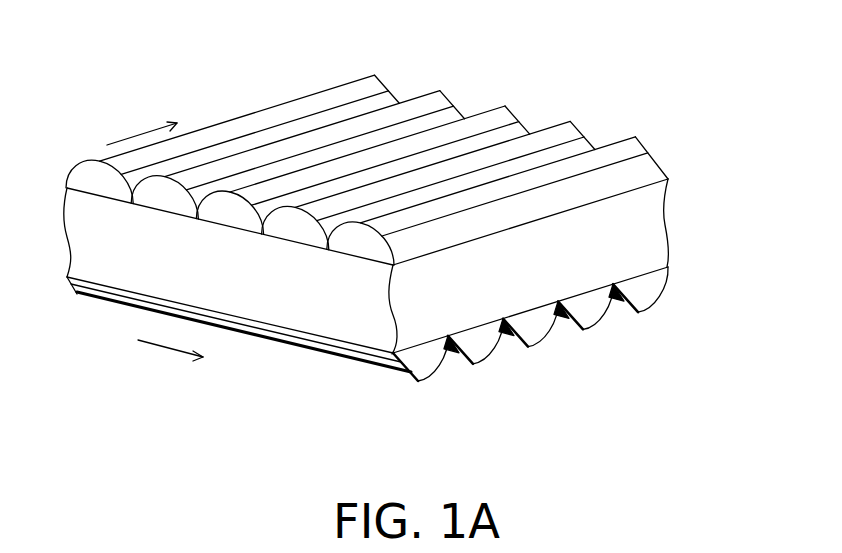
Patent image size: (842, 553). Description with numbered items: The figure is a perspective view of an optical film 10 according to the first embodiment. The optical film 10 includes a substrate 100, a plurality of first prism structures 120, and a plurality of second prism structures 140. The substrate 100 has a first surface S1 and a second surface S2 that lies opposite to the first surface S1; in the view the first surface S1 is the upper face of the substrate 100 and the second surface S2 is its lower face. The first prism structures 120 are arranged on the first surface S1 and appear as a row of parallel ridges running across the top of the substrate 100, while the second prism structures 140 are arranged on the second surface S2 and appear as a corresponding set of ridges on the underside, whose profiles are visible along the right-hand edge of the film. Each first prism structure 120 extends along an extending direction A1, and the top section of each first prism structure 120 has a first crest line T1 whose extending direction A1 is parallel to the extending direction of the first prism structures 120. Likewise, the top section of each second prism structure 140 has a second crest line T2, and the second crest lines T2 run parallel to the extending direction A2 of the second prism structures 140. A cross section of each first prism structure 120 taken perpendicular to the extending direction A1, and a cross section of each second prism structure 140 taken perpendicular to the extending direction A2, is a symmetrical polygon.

The optical film 10 is at (88, 52).
The substrate 100 is at (648, 229).
The first prism structures 120 is at (637, 147).
The second prism structures 140 is at (639, 302).
The first surface S1 is at (628, 196).
The second surface S2 is at (632, 272).
The first crest line T1 is at (313, 95).
The second crest line T2 is at (343, 360).
The extending direction A1 is at (142, 124).
The extending direction A2 is at (170, 362).